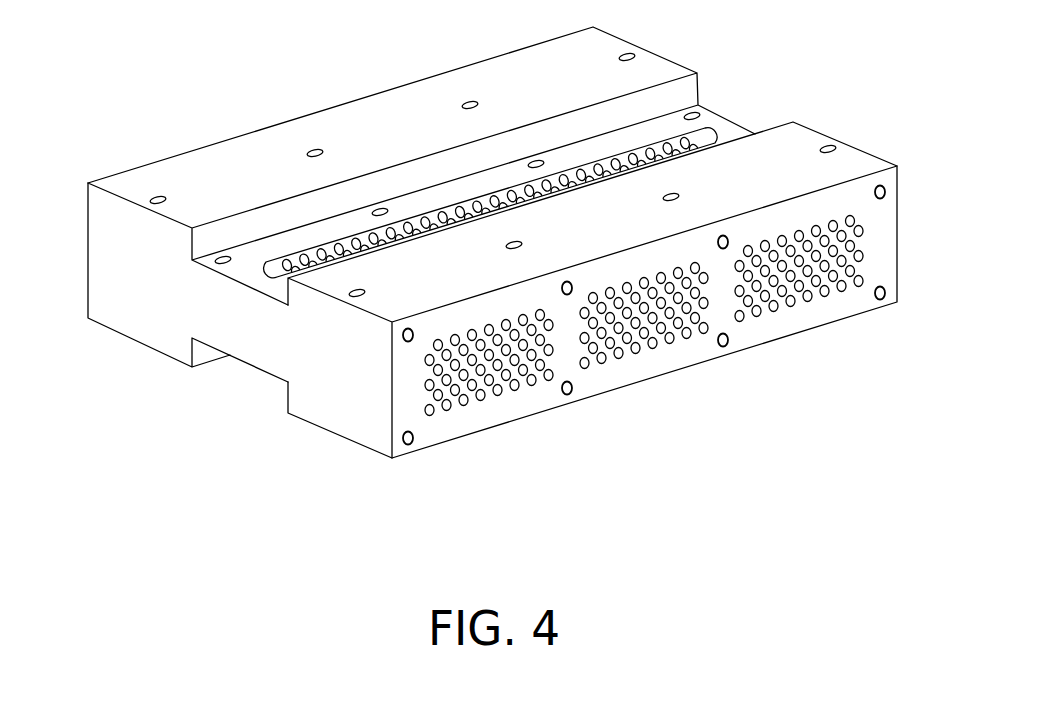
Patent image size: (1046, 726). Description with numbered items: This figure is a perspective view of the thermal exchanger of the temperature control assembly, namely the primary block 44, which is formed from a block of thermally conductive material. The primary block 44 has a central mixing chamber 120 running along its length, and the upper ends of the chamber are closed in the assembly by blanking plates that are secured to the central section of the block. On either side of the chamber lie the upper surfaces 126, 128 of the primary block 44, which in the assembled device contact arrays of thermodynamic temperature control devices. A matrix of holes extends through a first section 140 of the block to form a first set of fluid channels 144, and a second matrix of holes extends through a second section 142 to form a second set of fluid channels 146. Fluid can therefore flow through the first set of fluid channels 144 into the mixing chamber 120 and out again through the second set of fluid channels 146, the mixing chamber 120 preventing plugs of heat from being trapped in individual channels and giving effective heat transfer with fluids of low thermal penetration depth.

The primary block 44 is at (247, 105).
The central mixing chamber 120 is at (698, 142).
The upper surface 126 is at (398, 103).
The upper surface 128 is at (790, 142).
The first section 140 is at (335, 410).
The second section 142 is at (130, 320).
The first set of fluid channels 144 is at (500, 383).
The second set of fluid channels 146 is at (318, 258).